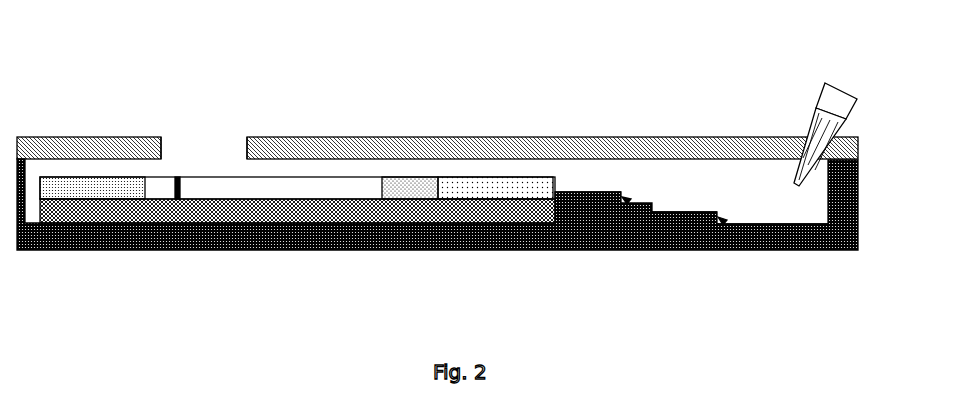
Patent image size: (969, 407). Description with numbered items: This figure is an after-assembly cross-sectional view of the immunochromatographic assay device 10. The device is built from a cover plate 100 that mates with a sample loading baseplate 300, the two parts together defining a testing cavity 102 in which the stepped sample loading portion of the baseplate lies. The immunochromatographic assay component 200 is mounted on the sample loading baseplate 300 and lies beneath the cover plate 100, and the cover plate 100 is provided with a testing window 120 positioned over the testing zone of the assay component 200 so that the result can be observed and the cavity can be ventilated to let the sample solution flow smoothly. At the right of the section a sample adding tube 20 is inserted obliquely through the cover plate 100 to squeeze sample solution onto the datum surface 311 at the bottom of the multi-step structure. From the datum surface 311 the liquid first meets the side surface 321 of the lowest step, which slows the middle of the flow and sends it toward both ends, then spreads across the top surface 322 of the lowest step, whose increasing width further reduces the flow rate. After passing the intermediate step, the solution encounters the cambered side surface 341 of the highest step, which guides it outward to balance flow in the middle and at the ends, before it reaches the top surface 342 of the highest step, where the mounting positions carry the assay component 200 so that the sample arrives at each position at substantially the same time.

The immunochromatographic assay device 10 is at (834, 36).
The sample adding tube 20 is at (855, 111).
The cover plate 100 is at (367, 147).
The testing cavity 102 is at (642, 182).
The testing window 120 is at (200, 147).
The immunochromatographic assay component 200 is at (408, 198).
The sample loading baseplate 300 is at (465, 250).
The datum surface 311 is at (777, 216).
The side surface of lowest step 321 is at (757, 250).
The top surface of lowest step 322 is at (700, 204).
The side surface of highest step 341 is at (658, 250).
The top surface of highest step 342 is at (587, 184).